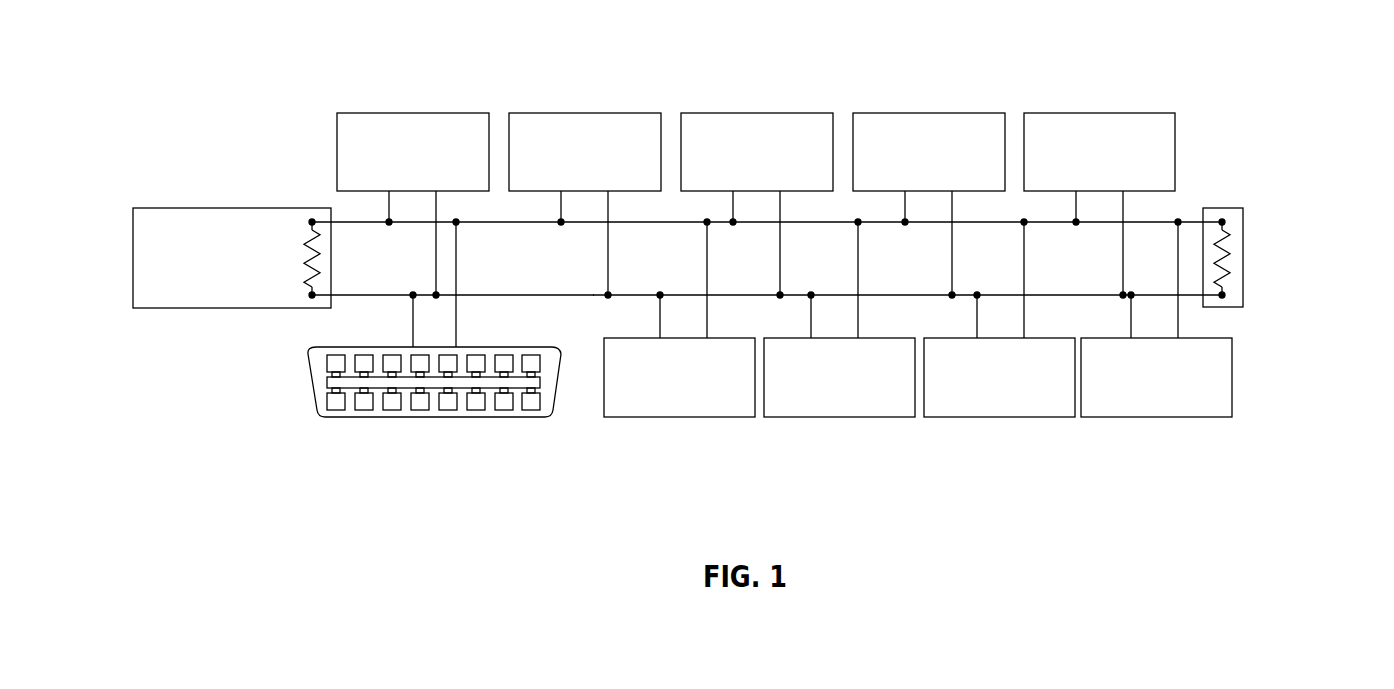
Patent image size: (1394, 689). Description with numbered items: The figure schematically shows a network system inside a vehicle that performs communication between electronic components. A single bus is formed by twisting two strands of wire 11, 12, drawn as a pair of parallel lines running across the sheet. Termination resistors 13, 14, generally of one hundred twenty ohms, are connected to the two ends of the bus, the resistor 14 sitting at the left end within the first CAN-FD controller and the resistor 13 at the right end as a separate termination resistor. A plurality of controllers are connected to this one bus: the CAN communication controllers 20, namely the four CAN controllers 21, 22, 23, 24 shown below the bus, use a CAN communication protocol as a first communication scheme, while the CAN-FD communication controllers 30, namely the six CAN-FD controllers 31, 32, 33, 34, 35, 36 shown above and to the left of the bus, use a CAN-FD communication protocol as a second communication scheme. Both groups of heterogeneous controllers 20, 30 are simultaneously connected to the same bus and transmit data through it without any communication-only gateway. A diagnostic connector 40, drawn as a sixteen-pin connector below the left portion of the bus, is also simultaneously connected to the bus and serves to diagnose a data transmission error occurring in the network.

The wire 11 is at (1165, 218).
The wire 12 is at (593, 297).
The termination resistor 13 is at (1243, 237).
The termination resistor 14 is at (302, 265).
The CAN communication controllers 20 is at (916, 363).
The CAN controller 21 is at (678, 418).
The CAN controller 22 is at (850, 418).
The CAN controller 23 is at (995, 418).
The CAN controller 24 is at (1155, 418).
The CAN-FD communication controllers 30 is at (761, 269).
The CAN-FD controller 31 is at (263, 243).
The CAN-FD controller 32 is at (423, 112).
The CAN-FD controller 33 is at (595, 112).
The CAN-FD controller 34 is at (767, 112).
The CAN-FD controller 35 is at (939, 112).
The CAN-FD controller 36 is at (1110, 112).
The diagnostic connector 40 is at (313, 380).